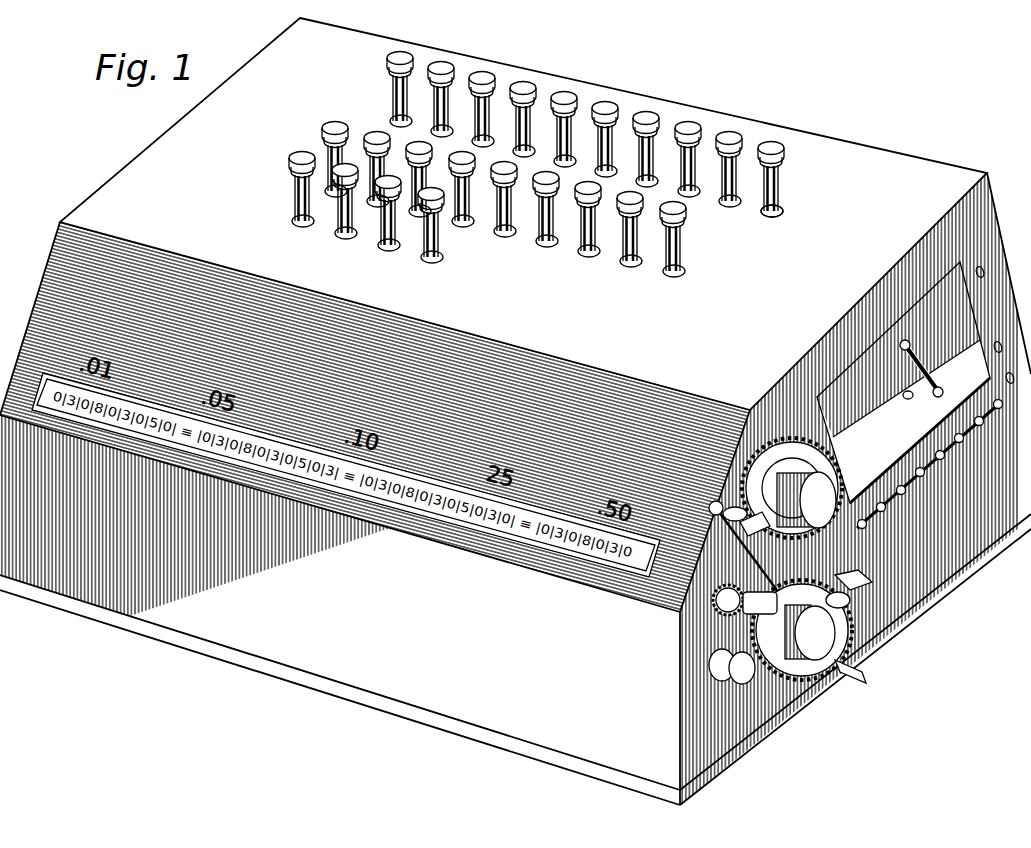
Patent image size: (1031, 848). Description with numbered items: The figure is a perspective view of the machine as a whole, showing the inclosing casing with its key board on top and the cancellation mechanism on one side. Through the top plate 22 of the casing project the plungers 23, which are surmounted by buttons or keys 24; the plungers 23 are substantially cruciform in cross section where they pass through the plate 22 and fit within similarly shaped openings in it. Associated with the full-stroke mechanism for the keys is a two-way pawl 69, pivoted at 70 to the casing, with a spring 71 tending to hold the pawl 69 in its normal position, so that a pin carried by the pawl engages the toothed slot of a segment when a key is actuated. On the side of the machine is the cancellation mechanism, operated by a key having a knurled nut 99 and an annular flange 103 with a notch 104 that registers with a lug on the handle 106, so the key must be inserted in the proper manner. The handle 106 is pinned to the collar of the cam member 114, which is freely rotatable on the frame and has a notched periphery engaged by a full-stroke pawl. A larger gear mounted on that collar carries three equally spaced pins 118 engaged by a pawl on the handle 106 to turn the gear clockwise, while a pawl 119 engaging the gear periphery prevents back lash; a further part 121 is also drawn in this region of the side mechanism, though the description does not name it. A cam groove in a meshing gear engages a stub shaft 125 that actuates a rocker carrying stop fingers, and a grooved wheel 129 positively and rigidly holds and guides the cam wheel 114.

The top plate 22 is at (515, 179).
The plungers 23 is at (762, 210).
The buttons or keys 24 is at (784, 157).
The two-way pawl 69 is at (901, 389).
The pivot 70 is at (922, 360).
The spring 71 is at (943, 391).
The knurled nut 99 is at (806, 500).
The annular flange 103 is at (758, 476).
The notch 104 is at (800, 545).
The handle 106 is at (712, 510).
The cam member 114 is at (777, 722).
The pins 118 is at (796, 585).
The pawl 119 is at (860, 594).
The arm 121 is at (848, 578).
The stub shaft 125 is at (815, 458).
The grooved wheel 129 is at (745, 755).